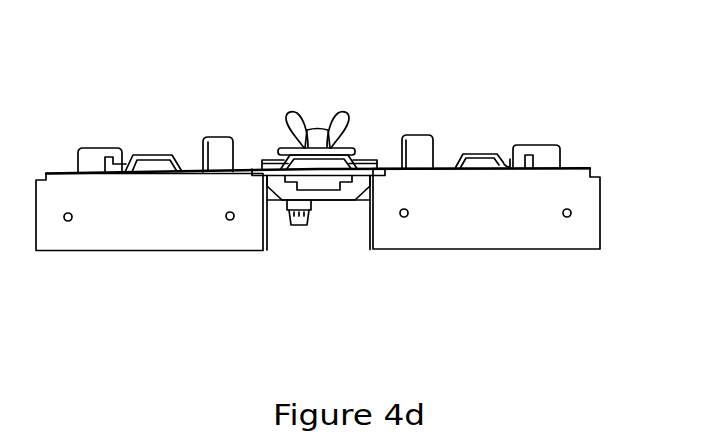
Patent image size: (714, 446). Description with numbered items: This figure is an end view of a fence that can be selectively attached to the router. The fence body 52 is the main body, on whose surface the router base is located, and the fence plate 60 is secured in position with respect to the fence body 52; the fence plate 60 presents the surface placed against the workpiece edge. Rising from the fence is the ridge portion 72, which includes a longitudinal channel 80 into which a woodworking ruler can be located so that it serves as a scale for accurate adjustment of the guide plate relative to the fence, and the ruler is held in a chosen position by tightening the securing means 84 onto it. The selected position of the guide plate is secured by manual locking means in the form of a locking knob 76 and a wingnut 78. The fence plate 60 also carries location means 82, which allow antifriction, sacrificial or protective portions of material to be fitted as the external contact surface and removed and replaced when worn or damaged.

The fence body 52 is at (577, 160).
The fence plate 60 is at (153, 237).
The ridge portion 72 is at (353, 157).
The locking knob 76 is at (302, 148).
The wingnut 78 is at (317, 137).
The channel 80 is at (327, 183).
The location means 82 is at (65, 221).
The securing means 84 is at (296, 227).